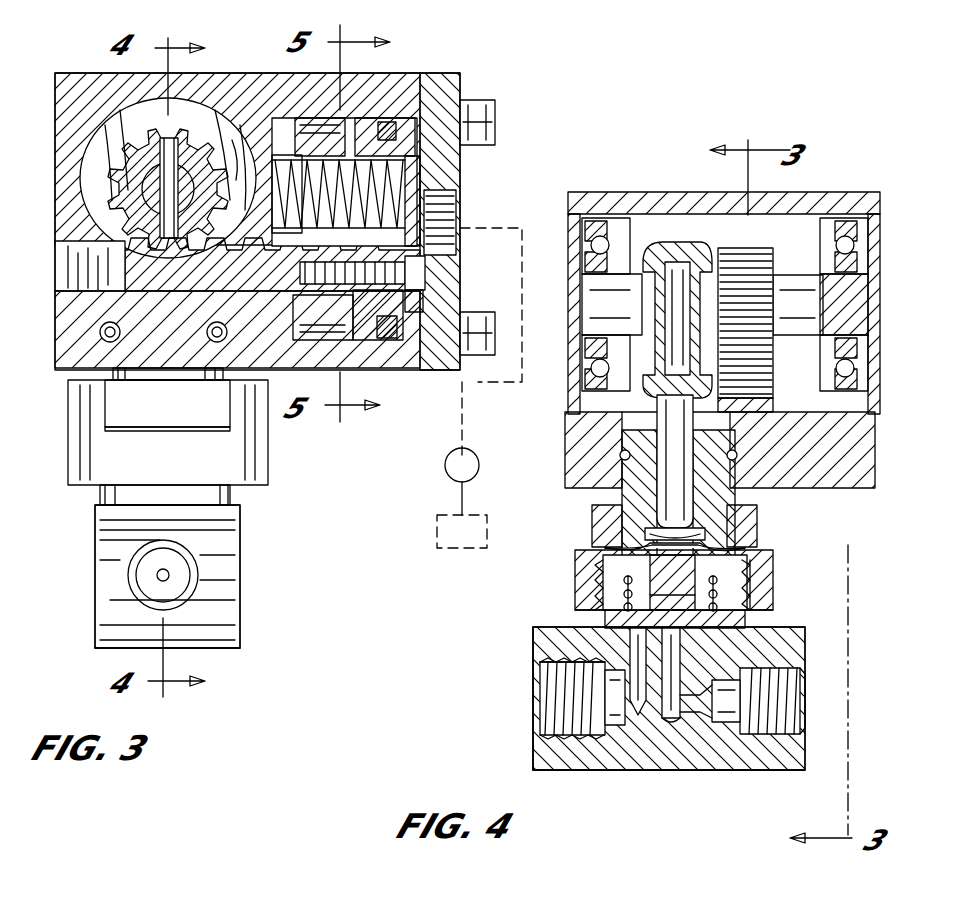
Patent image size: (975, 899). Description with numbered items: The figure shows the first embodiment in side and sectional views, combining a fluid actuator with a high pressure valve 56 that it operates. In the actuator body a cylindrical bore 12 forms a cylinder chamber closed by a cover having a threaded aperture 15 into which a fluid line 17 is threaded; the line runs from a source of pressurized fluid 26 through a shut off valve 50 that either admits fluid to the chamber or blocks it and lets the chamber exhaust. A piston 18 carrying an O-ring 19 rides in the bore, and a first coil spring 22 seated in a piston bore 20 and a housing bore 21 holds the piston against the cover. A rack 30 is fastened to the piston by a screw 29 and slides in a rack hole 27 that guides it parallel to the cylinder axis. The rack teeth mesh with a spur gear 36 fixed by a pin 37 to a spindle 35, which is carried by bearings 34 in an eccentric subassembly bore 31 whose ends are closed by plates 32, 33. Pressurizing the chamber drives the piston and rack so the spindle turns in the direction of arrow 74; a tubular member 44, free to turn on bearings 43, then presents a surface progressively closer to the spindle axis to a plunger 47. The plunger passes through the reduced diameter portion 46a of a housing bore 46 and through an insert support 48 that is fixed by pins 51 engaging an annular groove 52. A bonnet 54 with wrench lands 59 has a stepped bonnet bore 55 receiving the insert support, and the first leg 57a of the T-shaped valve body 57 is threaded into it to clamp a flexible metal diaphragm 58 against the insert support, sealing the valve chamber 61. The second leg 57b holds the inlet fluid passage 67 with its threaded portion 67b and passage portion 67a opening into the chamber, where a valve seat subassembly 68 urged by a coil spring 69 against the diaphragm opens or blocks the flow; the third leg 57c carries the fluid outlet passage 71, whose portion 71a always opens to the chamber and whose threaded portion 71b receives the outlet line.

In FIG. 3, the cylindrical bore 12 is at (350, 340).
In FIG. 3, the threaded aperture 15 is at (450, 270).
In FIG. 3, the fluid line 17 is at (491, 341).
In FIG. 3, the piston 18 is at (485, 100).
In FIG. 3, the O-ring 19 is at (380, 120).
In FIG. 3, the piston bore 20 is at (420, 192).
In FIG. 3, the housing bore 21 is at (359, 298).
In FIG. 3, the first coil spring 22 is at (340, 160).
In FIG. 3, the source of pressurized fluid 26 is at (437, 525).
In FIG. 3, the rack hole 27 is at (75, 240).
In FIG. 3, the screw 29 is at (425, 296).
In FIG. 3, the rack 30 is at (125, 280).
In FIG. 4, the rack 30 is at (878, 415).
In FIG. 3, the eccentric subassembly bore 31 is at (95, 100).
In FIG. 4, the eccentric subassembly bore 31 is at (795, 205).
In FIG. 4, the plate 32 is at (575, 195).
In FIG. 4, the plate 33 is at (878, 262).
In FIG. 4, the bearings 34 is at (590, 270).
In FIG. 4, the spindle 35 is at (845, 320).
In FIG. 3, the spur gear 36 is at (125, 145).
In FIG. 4, the spur gear 36 is at (760, 265).
In FIG. 3, the pin 37 is at (140, 185).
In FIG. 4, the bearings 43 is at (690, 262).
In FIG. 4, the tubular member 44 is at (655, 245).
In FIG. 4, the housing bore 46 is at (875, 458).
In FIG. 4, the reduced diameter portion 46a is at (640, 414).
In FIG. 4, the plunger 47 is at (672, 477).
In FIG. 3, the insert support 48 is at (162, 375).
In FIG. 4, the insert support 48 is at (728, 538).
In FIG. 3, the shut off valve 50 is at (445, 462).
In FIG. 3, the pins 51 is at (100, 332).
In FIG. 4, the annular groove 52 is at (625, 452).
In FIG. 3, the bonnet 54 is at (85, 455).
In FIG. 4, the bonnet 54 is at (580, 568).
In FIG. 4, the bonnet bore 55 is at (790, 576).
In FIG. 3, the high pressure valve 56 is at (300, 618).
In FIG. 4, the high pressure valve 56 is at (530, 627).
In FIG. 3, the valve body 57 is at (108, 592).
In FIG. 4, the valve body 57 is at (605, 760).
In FIG. 3, the first leg 57a is at (233, 500).
In FIG. 4, the first leg 57a is at (575, 582).
In FIG. 3, the second leg 57b is at (210, 650).
In FIG. 4, the second leg 57b is at (755, 770).
In FIG. 4, the third leg 57c is at (540, 765).
In FIG. 4, the flexible metal diaphragm 58 is at (625, 540).
In FIG. 3, the lands 59 is at (213, 410).
In FIG. 4, the lands 59 is at (592, 512).
In FIG. 4, the valve chamber 61 is at (770, 600).
In FIG. 3, the inlet fluid passage 67 is at (197, 576).
In FIG. 4, the inlet fluid passage 67 is at (780, 690).
In FIG. 4, the passage portion 67a is at (660, 722).
In FIG. 4, the threaded portion 67b is at (785, 745).
In FIG. 4, the valve seat subassembly 68 is at (755, 562).
In FIG. 4, the coil spring 69 is at (610, 595).
In FIG. 4, the fluid outlet passage 71 is at (550, 720).
In FIG. 4, the portion 71a is at (632, 682).
In FIG. 4, the threaded portion 71b is at (545, 655).
In FIG. 3, the arrow 74 is at (225, 140).